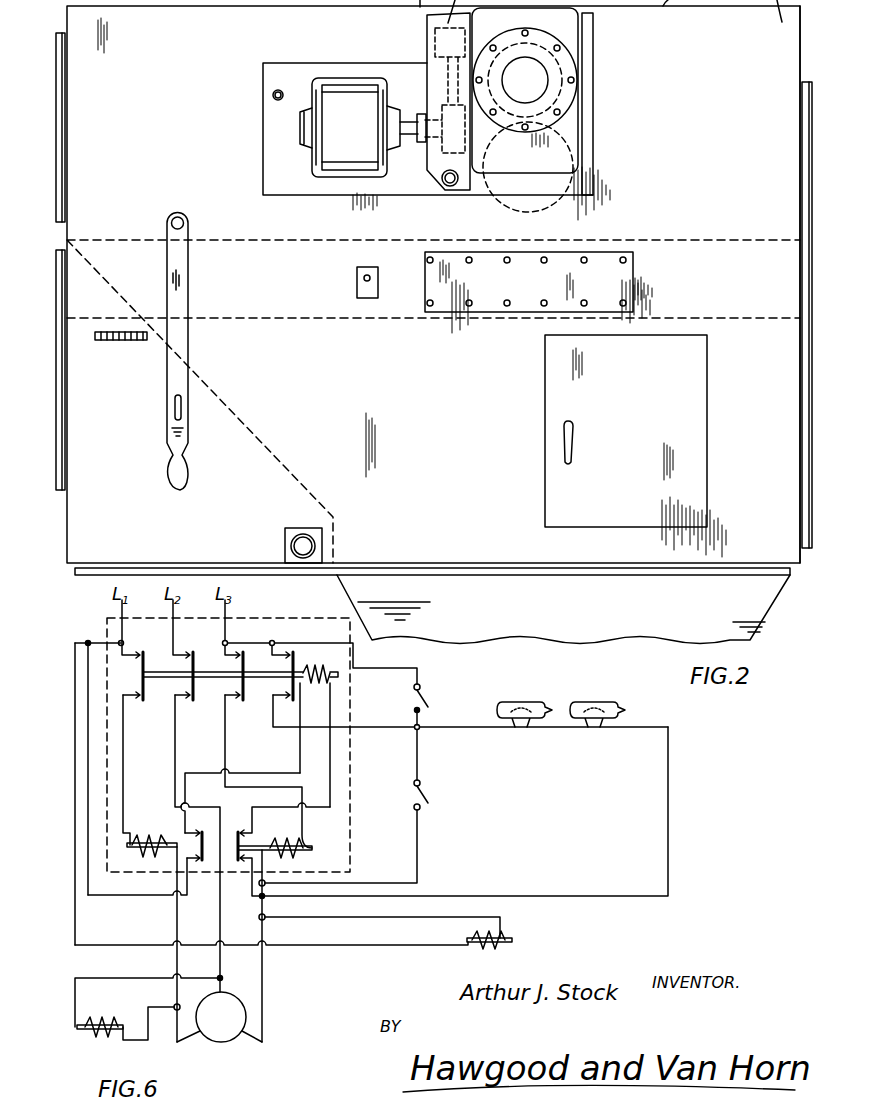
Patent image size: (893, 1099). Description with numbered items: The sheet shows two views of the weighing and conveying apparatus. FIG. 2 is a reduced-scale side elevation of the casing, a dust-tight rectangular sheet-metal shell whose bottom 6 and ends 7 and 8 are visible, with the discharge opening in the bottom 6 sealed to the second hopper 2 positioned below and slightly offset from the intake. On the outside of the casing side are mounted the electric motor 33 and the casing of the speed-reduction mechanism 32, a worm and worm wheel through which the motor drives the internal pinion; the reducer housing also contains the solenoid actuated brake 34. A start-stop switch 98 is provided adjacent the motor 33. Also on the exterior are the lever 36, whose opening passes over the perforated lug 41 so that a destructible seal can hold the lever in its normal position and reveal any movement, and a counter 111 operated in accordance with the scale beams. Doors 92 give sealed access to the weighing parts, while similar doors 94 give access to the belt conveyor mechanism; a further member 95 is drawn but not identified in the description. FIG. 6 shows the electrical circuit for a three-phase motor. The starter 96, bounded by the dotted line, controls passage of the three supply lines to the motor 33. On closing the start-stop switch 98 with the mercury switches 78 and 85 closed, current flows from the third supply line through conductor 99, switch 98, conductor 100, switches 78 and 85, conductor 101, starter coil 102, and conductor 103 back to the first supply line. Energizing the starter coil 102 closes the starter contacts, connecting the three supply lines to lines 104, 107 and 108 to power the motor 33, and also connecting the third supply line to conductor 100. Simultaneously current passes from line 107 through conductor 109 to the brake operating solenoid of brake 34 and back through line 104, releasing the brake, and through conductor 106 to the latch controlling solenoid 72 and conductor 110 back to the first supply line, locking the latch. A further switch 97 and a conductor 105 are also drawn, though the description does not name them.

In FIG. 2, the end 8 is at (67, 18).
In FIG. 2, the end 7 is at (809, 42).
In FIG. 2, the doors 94 is at (48, 150).
In FIG. 2, the doors 92 is at (48, 473).
In FIG. 2, the right guide rail 95 is at (812, 203).
In FIG. 2, the electric motor 33 is at (345, 80).
In FIG. 6, the electric motor 33 is at (220, 1042).
In FIG. 2, the start-stop switch 98 is at (273, 97).
In FIG. 6, the start-stop switch 98 is at (425, 692).
In FIG. 2, the speed-reduction mechanism 32 is at (575, 52).
In FIG. 2, the lever 36 is at (188, 342).
In FIG. 2, the perforated lug 41 is at (181, 408).
In FIG. 2, the counter 111 is at (100, 343).
In FIG. 2, the bottom 6 is at (97, 572).
In FIG. 2, the second hopper 2 is at (755, 605).
In FIG. 6, the starter 96 is at (350, 825).
In FIG. 6, the starter coil 102 is at (335, 663).
In FIG. 6, the conductor 99 is at (358, 653).
In FIG. 6, the line 104 is at (140, 773).
In FIG. 6, the conductor 103 is at (196, 773).
In FIG. 6, the line 107 is at (173, 737).
In FIG. 6, the line 108 is at (225, 732).
In FIG. 6, the conductor 105 is at (265, 958).
In FIG. 6, the switch 97 is at (428, 785).
In FIG. 6, the conductor 100 is at (482, 732).
In FIG. 6, the mercury switch 78 is at (517, 702).
In FIG. 6, the mercury switch 85 is at (613, 703).
In FIG. 6, the conductor 101 is at (667, 852).
In FIG. 6, the conductor 106 is at (357, 920).
In FIG. 6, the latch controlling solenoid 72 is at (505, 928).
In FIG. 6, the conductor 110 is at (333, 948).
In FIG. 6, the conductor 109 is at (119, 976).
In FIG. 6, the solenoid actuated brake 34 is at (85, 1018).